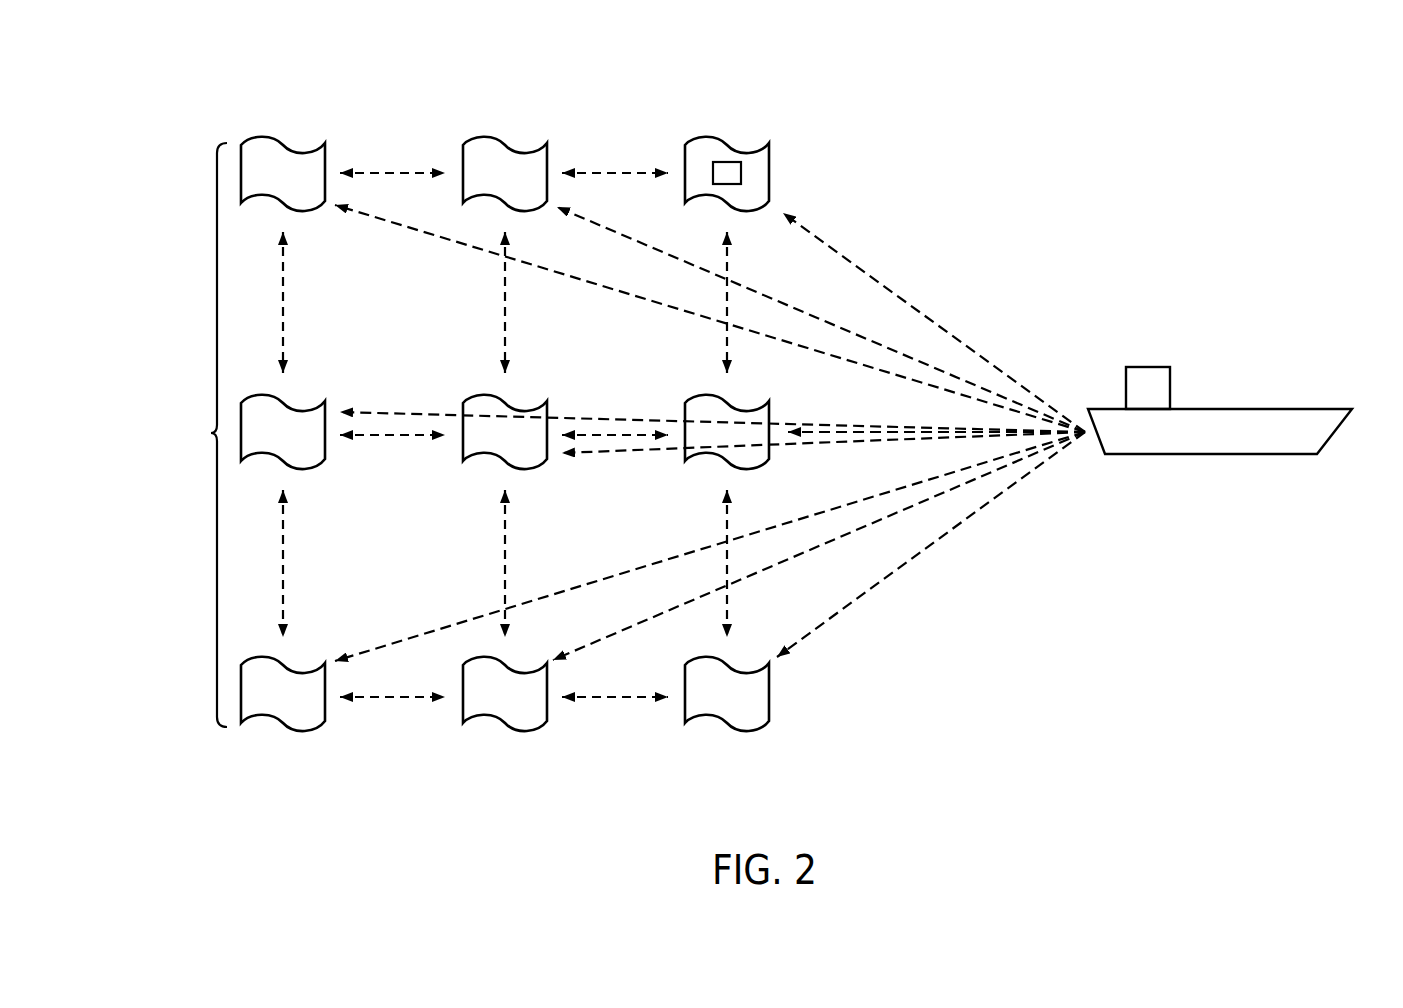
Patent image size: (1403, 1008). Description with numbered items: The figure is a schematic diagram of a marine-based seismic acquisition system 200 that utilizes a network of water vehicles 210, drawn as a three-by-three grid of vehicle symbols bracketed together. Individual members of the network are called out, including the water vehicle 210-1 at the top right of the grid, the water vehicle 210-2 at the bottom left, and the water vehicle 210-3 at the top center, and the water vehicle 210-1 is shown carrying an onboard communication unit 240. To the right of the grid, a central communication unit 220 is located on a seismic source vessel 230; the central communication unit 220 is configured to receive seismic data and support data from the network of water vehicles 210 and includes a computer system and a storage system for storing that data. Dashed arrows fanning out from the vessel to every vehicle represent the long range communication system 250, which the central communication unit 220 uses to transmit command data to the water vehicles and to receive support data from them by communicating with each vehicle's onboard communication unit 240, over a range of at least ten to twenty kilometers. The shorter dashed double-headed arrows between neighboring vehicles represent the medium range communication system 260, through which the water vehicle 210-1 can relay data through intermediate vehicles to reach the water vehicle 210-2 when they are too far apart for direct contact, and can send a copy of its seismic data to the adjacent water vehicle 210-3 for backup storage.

The marine-based seismic acquisition system 200 is at (1053, 93).
The network of water vehicles 210 is at (213, 433).
The water vehicle 210-1 is at (753, 127).
The water vehicle 210-2 is at (282, 744).
The water vehicle 210-3 is at (519, 126).
The central communication unit 220 is at (1200, 370).
The seismic source vessel 230 is at (1290, 480).
The onboard communication unit 240 is at (741, 173).
The long range communication system 250 is at (935, 325).
The medium range communication system 260 is at (604, 172).